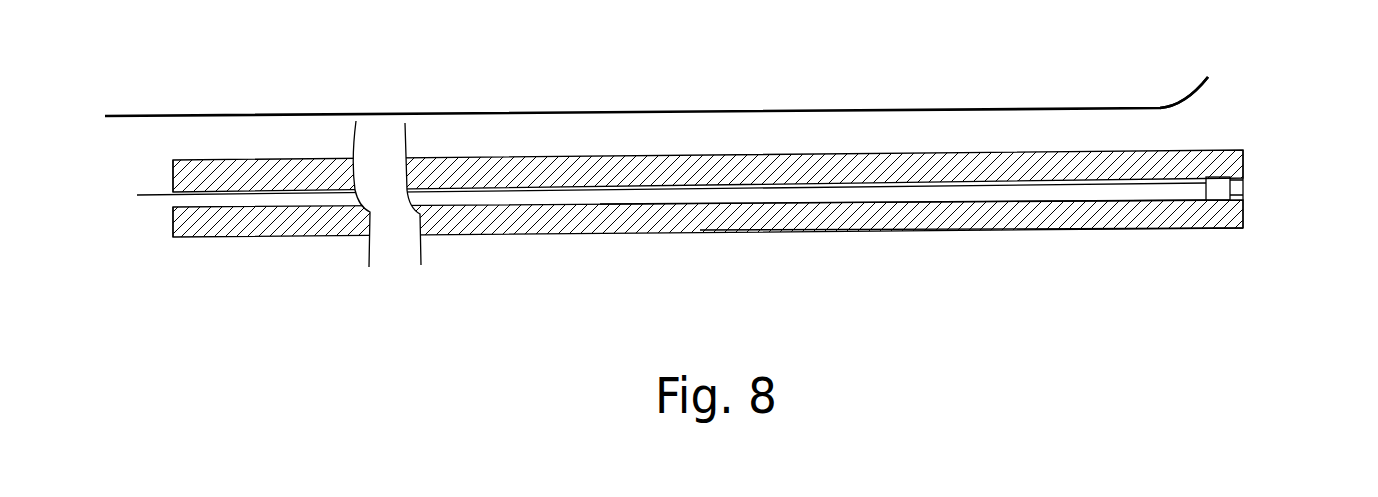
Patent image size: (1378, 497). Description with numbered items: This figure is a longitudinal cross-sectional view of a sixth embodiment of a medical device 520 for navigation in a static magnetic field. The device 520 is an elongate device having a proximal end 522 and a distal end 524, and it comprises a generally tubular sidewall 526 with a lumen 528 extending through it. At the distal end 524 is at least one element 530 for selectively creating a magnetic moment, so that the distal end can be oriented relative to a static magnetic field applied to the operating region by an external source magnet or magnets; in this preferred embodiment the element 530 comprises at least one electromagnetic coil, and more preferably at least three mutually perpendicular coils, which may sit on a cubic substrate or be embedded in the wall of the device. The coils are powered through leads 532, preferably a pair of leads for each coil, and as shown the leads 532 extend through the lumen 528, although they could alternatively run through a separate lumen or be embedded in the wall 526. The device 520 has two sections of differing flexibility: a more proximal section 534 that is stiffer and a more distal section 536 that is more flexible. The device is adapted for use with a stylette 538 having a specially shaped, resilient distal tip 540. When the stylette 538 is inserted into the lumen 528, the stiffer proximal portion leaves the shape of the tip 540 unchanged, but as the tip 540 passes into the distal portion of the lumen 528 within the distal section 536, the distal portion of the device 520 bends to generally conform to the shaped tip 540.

The medical device 520 is at (713, 227).
The proximal end 522 is at (155, 230).
The distal end 524 is at (1259, 177).
The tubular sidewall 526 is at (720, 155).
The lumen 528 is at (767, 195).
The element for selectively creating a magnetic moment 530 is at (1230, 196).
The leads 532 is at (822, 190).
The proximal section 534 is at (572, 235).
The distal section 536 is at (988, 229).
The stylette 538 is at (765, 82).
The shaped distal tip 540 is at (1190, 93).